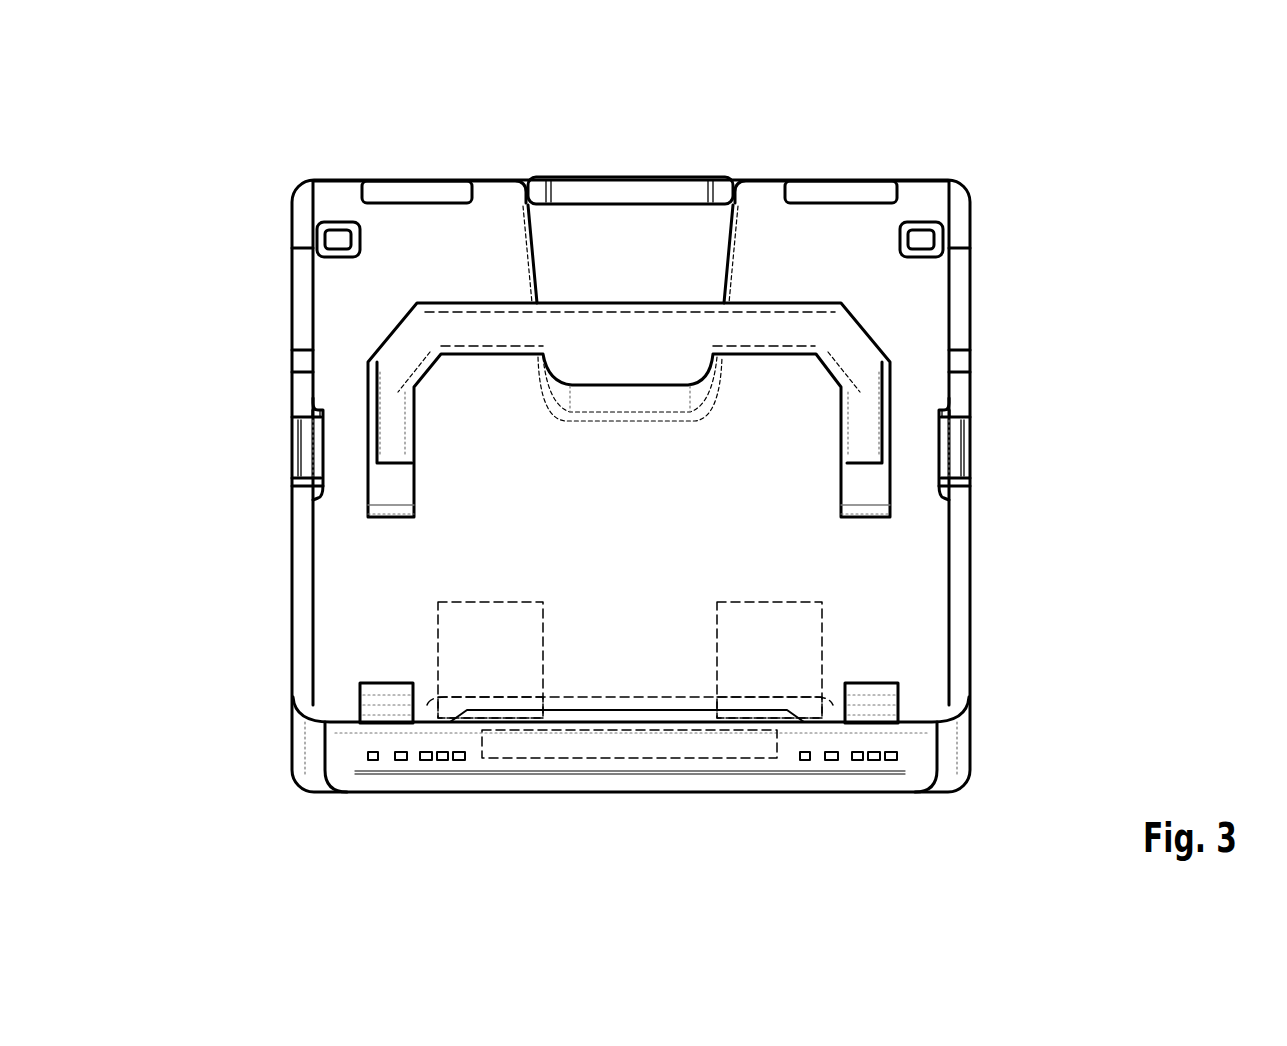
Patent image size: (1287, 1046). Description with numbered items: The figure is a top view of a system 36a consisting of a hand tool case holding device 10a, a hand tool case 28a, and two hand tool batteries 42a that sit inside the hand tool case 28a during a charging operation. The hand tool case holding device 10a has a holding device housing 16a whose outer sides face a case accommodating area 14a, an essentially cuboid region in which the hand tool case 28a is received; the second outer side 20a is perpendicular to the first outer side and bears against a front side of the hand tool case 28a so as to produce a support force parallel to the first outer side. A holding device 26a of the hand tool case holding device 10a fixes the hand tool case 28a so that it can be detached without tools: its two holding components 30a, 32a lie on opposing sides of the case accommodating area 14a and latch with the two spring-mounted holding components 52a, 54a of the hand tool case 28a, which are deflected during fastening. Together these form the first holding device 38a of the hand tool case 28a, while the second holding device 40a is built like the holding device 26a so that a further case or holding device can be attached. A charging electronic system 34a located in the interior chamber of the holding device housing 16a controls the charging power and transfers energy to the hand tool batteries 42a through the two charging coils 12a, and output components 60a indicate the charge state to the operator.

The hand tool case holding device 10a is at (669, 423).
The system 36a is at (669, 423).
The case accommodating area 14a is at (986, 218).
The hand tool case 28a is at (920, 310).
The holding device 26a is at (632, 457).
The holding component 30a is at (219, 457).
The holding component 32a is at (1044, 457).
The first holding device 38a is at (219, 468).
The second holding device 40a is at (219, 468).
The holding component 52a is at (281, 450).
The holding component 54a is at (981, 463).
The holding device housing 16a is at (948, 750).
The output components 60a is at (404, 768).
The hand tool battery 42a is at (465, 680).
The charging coil 12a is at (500, 712).
The second outer side 20a is at (631, 700).
The charging electronic system 34a is at (598, 745).